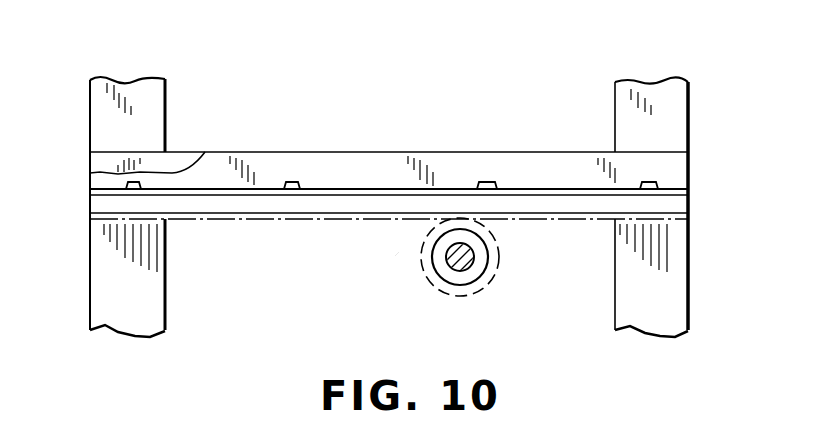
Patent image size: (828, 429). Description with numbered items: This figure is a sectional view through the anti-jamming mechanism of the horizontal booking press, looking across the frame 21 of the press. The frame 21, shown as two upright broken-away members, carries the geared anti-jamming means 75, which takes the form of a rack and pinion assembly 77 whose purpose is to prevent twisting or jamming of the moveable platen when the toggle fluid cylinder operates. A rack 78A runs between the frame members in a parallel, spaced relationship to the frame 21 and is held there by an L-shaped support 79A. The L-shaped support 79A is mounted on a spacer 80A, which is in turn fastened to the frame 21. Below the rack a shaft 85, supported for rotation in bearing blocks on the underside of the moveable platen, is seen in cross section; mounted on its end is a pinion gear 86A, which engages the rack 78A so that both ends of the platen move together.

The frame 21 is at (103, 118).
The geared anti-jamming means 75 is at (452, 126).
The rack and pinion assembly 77 is at (397, 254).
The rack 78A is at (258, 218).
The L-shaped support 79A is at (276, 162).
The spacer 80A is at (176, 162).
The shaft 85 is at (462, 263).
The pinion gear 86A is at (486, 257).